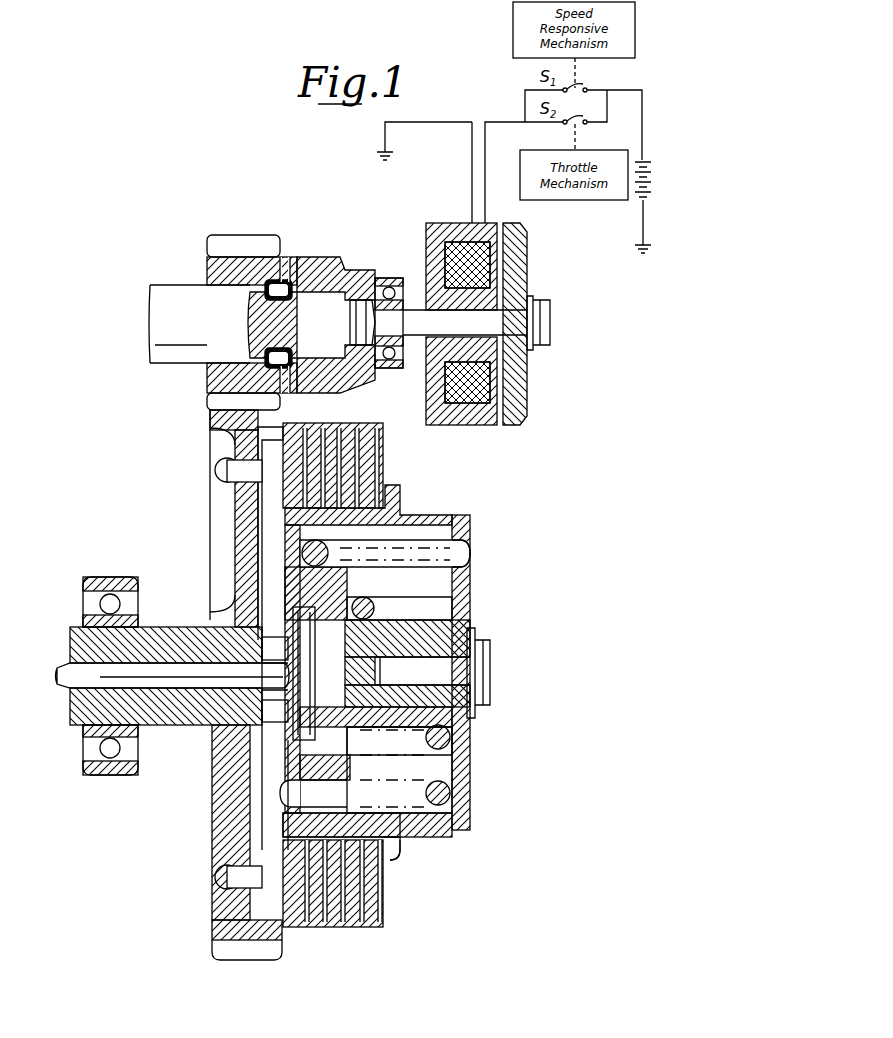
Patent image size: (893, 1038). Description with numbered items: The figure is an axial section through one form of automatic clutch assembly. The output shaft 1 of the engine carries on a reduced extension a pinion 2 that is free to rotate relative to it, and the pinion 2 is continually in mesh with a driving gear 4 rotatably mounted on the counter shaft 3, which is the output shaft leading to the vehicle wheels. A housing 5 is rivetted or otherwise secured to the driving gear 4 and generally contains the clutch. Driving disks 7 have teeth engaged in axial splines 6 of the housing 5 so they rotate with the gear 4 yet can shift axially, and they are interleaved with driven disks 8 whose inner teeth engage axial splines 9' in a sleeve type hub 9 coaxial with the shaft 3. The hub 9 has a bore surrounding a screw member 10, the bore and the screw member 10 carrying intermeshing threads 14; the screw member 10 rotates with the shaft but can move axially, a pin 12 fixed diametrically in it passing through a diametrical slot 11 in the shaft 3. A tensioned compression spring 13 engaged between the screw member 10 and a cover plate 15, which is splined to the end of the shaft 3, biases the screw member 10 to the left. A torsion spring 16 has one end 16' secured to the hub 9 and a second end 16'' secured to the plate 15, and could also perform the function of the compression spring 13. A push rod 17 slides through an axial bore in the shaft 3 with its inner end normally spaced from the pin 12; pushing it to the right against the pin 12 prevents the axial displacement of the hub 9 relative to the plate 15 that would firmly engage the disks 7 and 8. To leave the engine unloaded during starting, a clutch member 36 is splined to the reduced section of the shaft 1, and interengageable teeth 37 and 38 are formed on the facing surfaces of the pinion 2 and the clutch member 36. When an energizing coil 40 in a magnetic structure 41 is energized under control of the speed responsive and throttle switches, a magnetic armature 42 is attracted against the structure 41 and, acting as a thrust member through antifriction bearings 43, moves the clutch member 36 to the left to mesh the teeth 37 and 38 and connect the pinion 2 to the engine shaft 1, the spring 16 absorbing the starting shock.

The output shaft 1 is at (190, 305).
The pinion 2 is at (245, 264).
The counter shaft 3 is at (223, 645).
The driving gear 4 is at (250, 536).
The housing 5 is at (260, 900).
The splines 6 is at (383, 426).
The driving disks 7 is at (344, 447).
The driven disks 8 is at (355, 925).
The sleeve type hub 9 is at (279, 848).
The splines 9' is at (412, 869).
The screw member 10 is at (327, 627).
The slot 11 is at (272, 701).
The pin 12 is at (252, 727).
The compression spring 13 is at (400, 745).
The intermeshing threads 14 is at (330, 747).
The cover plate 15 is at (470, 618).
The torsion spring 16 is at (393, 516).
The torsion spring end 16' is at (249, 813).
The torsion spring end 16'' is at (505, 530).
The push rod 17 is at (102, 681).
The clutch member 36 is at (340, 285).
The teeth 37 is at (289, 262).
The teeth 38 is at (270, 284).
The energizing coil 40 is at (470, 263).
The magnetic structure 41 is at (432, 243).
The magnetic armature 42 is at (528, 250).
The antifriction bearings 43 is at (381, 276).